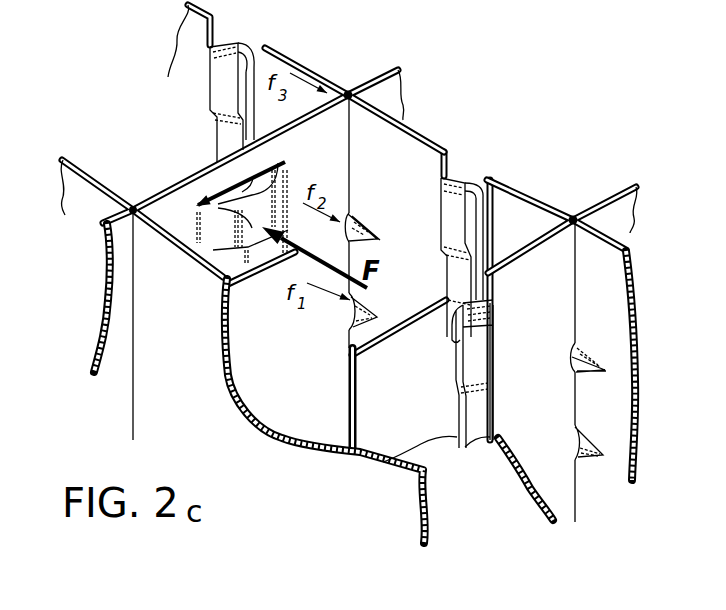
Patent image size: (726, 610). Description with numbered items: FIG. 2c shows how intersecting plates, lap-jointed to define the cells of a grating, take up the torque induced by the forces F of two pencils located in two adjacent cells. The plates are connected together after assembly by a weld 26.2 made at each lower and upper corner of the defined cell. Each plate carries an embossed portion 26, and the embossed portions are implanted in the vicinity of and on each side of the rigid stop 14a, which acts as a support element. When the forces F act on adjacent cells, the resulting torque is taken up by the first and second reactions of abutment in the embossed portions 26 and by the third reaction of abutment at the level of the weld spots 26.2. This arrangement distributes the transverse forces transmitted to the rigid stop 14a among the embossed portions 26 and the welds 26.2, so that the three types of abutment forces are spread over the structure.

The weld 26.2 is at (348, 93).
The embossed portion 26 is at (348, 226).
The rigid stop 14a is at (196, 206).